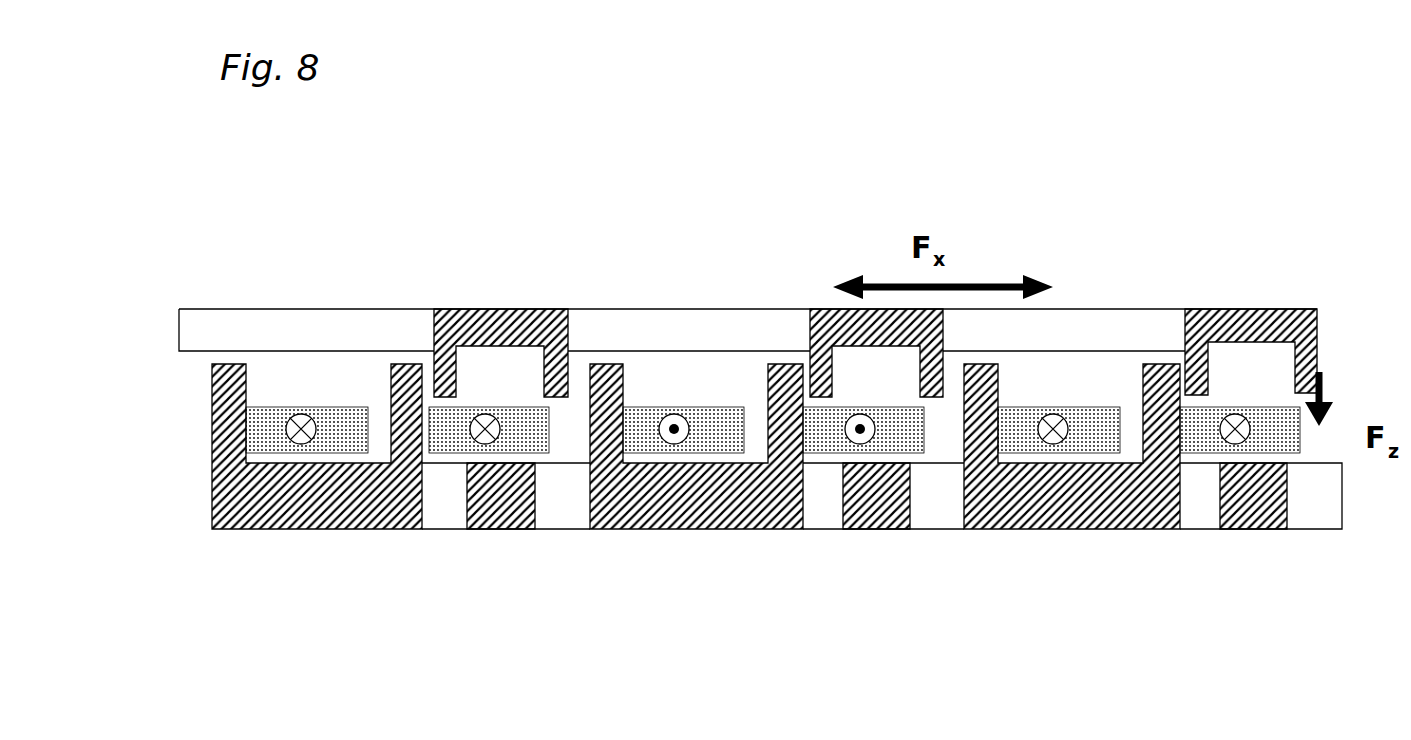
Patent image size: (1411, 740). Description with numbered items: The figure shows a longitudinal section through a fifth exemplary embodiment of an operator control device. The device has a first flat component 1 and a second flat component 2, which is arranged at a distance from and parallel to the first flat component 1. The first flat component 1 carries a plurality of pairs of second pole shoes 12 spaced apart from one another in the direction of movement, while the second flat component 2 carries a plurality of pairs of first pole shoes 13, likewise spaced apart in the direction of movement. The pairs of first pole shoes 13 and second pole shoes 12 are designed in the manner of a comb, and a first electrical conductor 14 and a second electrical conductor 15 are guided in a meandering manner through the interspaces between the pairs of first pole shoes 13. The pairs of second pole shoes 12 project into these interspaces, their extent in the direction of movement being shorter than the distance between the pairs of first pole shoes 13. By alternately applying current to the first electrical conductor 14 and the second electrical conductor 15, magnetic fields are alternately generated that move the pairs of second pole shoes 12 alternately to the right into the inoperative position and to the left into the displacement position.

The first flat component 1 is at (318, 308).
The second flat component 2 is at (692, 515).
The second pole shoes 12 is at (557, 369).
The first pole shoes 13 is at (391, 387).
The first electrical conductor 14 is at (333, 440).
The second electrical conductor 15 is at (512, 442).